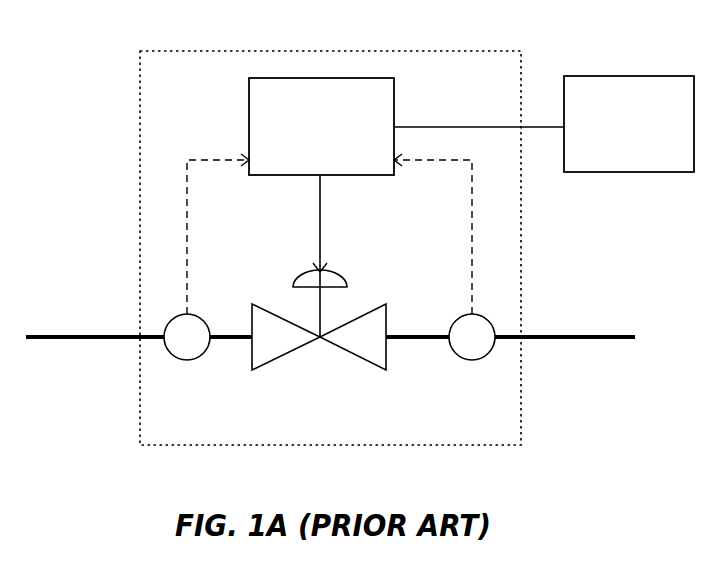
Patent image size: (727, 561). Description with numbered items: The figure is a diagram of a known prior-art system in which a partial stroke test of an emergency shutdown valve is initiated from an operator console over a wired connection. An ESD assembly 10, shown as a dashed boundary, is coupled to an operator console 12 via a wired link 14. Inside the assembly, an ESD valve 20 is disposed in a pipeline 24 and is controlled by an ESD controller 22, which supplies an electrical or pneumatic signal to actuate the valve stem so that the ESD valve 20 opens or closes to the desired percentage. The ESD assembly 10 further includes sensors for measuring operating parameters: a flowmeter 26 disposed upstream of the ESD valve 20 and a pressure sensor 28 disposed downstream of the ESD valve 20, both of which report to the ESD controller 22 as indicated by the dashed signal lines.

The ESD assembly 10 is at (140, 131).
The operator console 12 is at (608, 76).
The wired link 14 is at (485, 127).
The ESD valve 20 is at (387, 315).
The ESD controller 22 is at (394, 108).
The pipeline 24 is at (581, 336).
The flowmeter 26 is at (486, 357).
The pressure sensor 28 is at (203, 356).